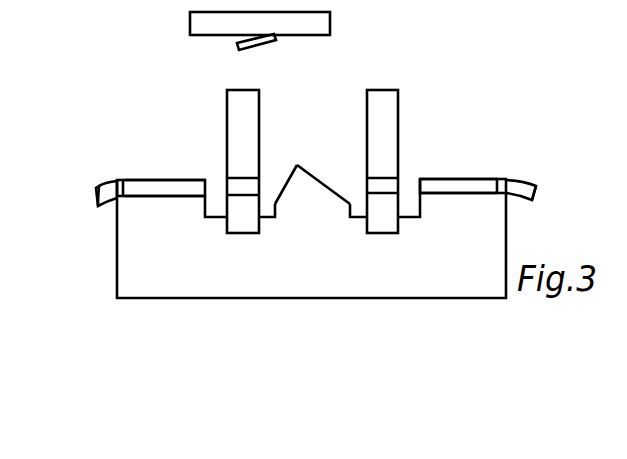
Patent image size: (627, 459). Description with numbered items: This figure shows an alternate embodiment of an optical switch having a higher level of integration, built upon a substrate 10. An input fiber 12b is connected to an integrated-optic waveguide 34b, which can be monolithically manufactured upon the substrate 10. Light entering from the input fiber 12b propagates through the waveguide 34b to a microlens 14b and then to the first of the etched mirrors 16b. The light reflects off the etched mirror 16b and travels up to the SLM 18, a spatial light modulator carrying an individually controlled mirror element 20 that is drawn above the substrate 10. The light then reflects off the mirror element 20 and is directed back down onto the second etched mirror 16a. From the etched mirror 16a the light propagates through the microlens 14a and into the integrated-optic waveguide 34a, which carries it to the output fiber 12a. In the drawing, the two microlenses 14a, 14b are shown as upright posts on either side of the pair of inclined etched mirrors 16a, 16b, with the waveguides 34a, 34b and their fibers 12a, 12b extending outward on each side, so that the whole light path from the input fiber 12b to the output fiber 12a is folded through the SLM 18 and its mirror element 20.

The substrate 10 is at (455, 262).
The fiber 12a is at (541, 156).
The input fiber 12b is at (118, 179).
The microlens 14a is at (387, 90).
The microlens 14b is at (243, 96).
The etched mirror 16a is at (355, 161).
The etched mirror 16b is at (283, 175).
The SLM 18 is at (320, 23).
The individually controlled mirror element 20 is at (276, 37).
The integrated-optic waveguide 34a is at (466, 178).
The integrated-optic waveguide 34b is at (210, 159).